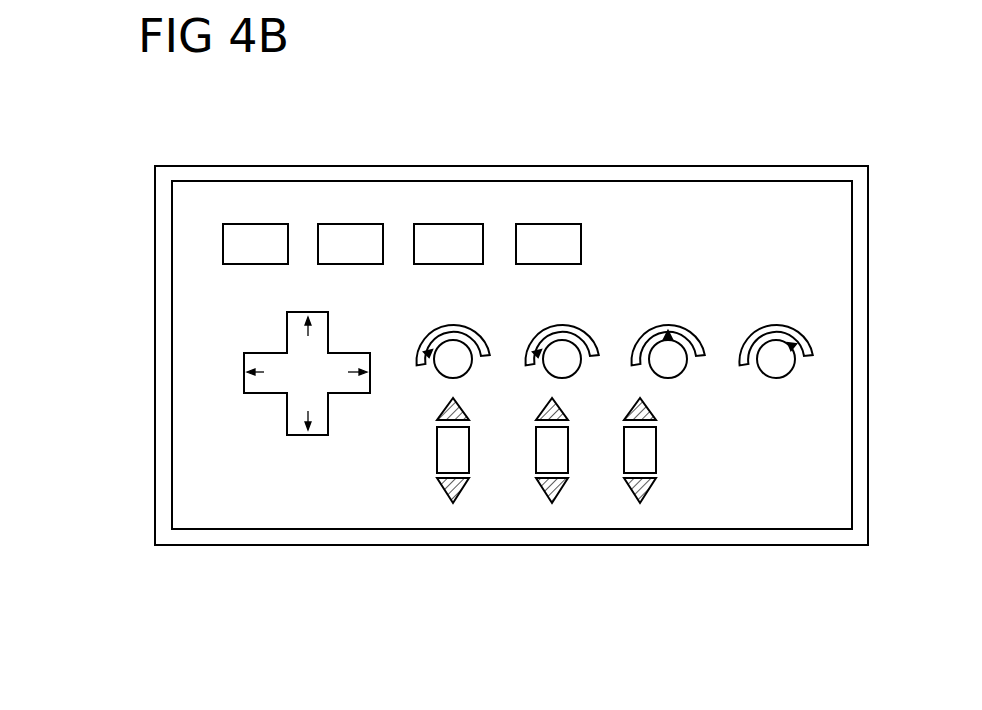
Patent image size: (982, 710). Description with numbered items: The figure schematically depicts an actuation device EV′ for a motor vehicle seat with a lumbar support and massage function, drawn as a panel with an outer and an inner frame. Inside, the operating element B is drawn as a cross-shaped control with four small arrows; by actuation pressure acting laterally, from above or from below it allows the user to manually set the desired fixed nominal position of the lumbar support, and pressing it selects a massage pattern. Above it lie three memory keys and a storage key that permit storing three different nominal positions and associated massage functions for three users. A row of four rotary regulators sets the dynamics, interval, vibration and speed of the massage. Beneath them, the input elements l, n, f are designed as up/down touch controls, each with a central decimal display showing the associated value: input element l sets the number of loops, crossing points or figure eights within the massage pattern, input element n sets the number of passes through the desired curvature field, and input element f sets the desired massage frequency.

The actuation device EV′ is at (132, 219).
The operating element B is at (279, 380).
The input element l is at (479, 492).
The input element n is at (575, 489).
The input element f is at (670, 487).